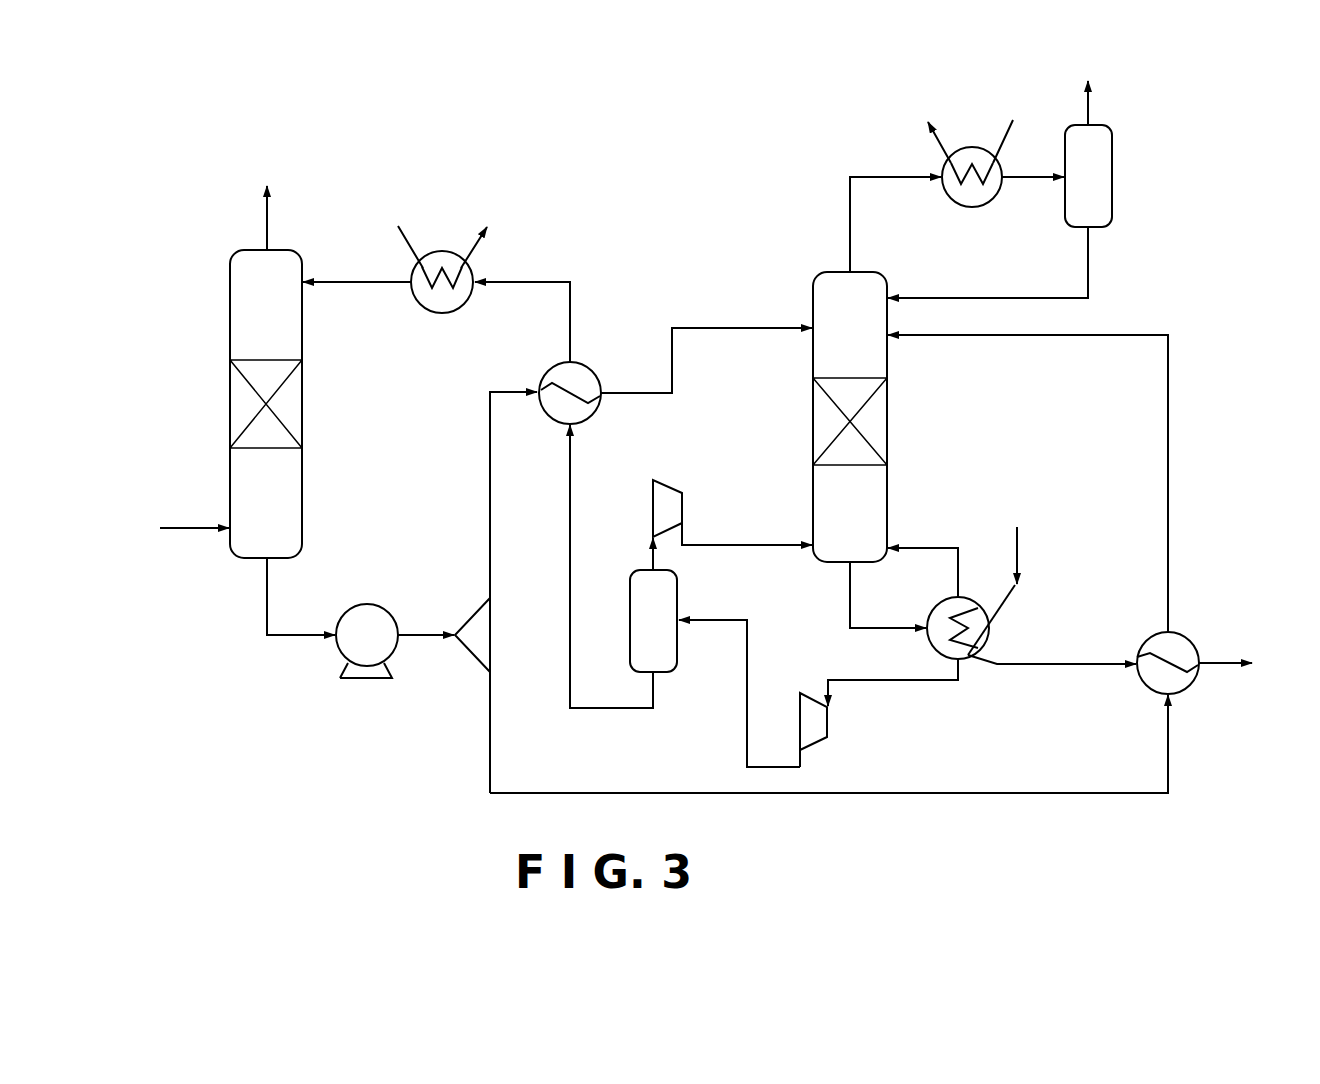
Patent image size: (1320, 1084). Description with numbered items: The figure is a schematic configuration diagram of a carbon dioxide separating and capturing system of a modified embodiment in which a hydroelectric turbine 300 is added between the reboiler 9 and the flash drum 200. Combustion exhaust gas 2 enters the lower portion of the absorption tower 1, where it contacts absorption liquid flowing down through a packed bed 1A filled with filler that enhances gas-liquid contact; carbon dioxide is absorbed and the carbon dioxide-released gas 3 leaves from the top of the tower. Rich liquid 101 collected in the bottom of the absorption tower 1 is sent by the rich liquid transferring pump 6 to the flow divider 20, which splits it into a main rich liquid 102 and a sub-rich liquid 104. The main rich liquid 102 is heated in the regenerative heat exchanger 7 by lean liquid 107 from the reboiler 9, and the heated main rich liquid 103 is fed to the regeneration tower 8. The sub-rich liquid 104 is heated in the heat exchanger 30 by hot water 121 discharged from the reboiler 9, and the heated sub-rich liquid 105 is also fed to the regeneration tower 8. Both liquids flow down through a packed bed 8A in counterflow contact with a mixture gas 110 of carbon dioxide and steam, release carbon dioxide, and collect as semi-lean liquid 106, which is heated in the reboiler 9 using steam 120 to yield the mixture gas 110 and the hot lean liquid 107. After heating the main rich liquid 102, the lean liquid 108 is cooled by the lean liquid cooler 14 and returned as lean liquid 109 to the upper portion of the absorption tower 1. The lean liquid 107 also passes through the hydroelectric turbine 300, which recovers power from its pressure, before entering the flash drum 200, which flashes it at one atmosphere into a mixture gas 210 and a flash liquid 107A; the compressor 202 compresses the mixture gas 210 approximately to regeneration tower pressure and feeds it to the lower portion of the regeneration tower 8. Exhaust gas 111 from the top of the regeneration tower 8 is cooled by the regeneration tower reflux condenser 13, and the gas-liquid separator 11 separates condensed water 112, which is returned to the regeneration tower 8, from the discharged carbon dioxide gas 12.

The absorption tower 1 is at (232, 311).
The packed bed 1A is at (292, 406).
The combustion exhaust gas 2 is at (192, 526).
The carbon dioxide-released gas 3 is at (266, 217).
The rich liquid transferring pump 6 is at (366, 604).
The regenerative heat exchanger 7 is at (547, 370).
The regeneration tower 8 is at (829, 270).
The packed bed 8A is at (880, 421).
The reboiler 9 is at (936, 600).
The gas-liquid separator 11 is at (1113, 179).
The carbon dioxide gas 12 is at (1090, 106).
The regeneration tower reflux condenser 13 is at (973, 208).
The lean liquid cooler 14 is at (432, 312).
The flow divider 20 is at (469, 656).
The heat exchanger 30 is at (1194, 688).
The rich liquid 101 is at (266, 612).
The main rich liquid 102 is at (489, 484).
The heated main rich liquid 103 is at (704, 327).
The sub-rich liquid 104 is at (721, 793).
The heated sub-rich liquid 105 is at (1167, 444).
The semi-lean liquid 106 is at (847, 600).
The lean liquid 107 is at (917, 681).
The flash liquid 107A is at (608, 709).
The lean liquid 108 is at (532, 282).
The lean liquid 109 is at (352, 282).
The mixture gas 110 is at (926, 547).
The exhaust gas 111 is at (851, 237).
The condensed water 112 is at (1090, 266).
The steam 120 is at (1020, 543).
The hot water 121 is at (1045, 666).
The flash drum 200 is at (678, 648).
The compressor 202 is at (670, 481).
The mixture gas 210 is at (632, 556).
The hydroelectric turbine 300 is at (820, 745).